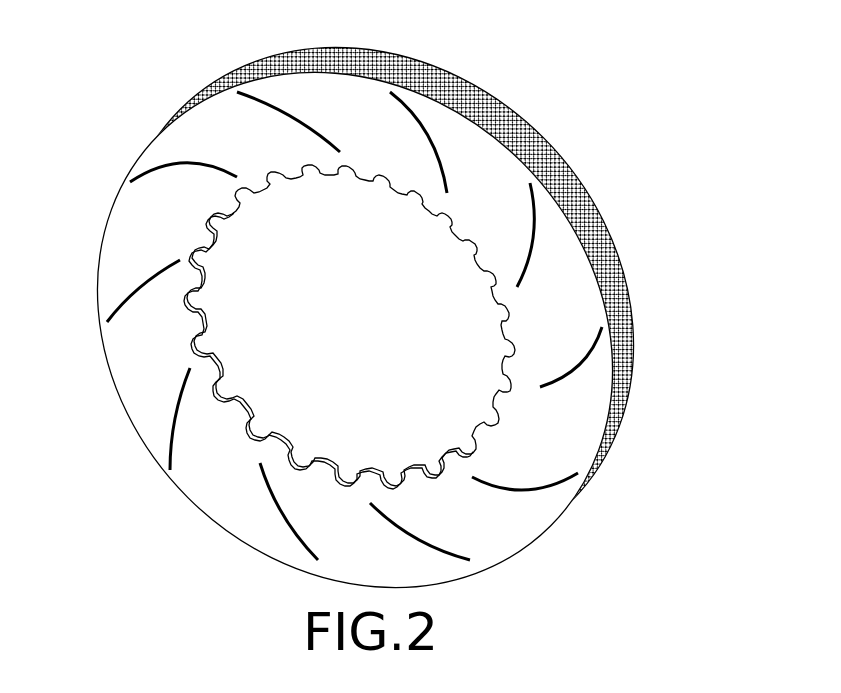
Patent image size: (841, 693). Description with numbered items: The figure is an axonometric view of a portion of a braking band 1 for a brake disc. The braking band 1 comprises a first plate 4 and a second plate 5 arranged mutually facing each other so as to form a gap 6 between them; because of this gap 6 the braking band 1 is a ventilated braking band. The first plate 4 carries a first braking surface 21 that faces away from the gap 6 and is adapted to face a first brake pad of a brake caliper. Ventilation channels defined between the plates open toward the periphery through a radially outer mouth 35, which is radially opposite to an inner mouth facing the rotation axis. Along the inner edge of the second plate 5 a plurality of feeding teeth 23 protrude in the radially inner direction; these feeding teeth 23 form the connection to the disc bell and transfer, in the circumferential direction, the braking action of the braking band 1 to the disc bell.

The braking band 1 is at (668, 154).
The first plate 4 is at (480, 197).
The second plate 5 is at (580, 173).
The gap 6 is at (604, 224).
The first braking surface 21 is at (553, 311).
The feeding teeth 23 is at (505, 303).
The radially outer mouth 35 is at (627, 330).